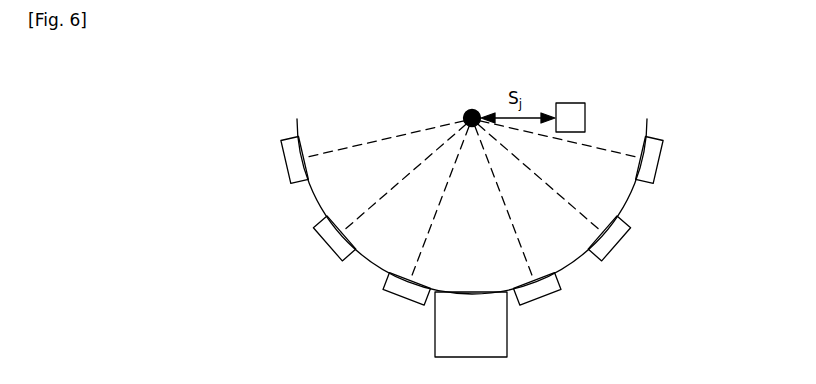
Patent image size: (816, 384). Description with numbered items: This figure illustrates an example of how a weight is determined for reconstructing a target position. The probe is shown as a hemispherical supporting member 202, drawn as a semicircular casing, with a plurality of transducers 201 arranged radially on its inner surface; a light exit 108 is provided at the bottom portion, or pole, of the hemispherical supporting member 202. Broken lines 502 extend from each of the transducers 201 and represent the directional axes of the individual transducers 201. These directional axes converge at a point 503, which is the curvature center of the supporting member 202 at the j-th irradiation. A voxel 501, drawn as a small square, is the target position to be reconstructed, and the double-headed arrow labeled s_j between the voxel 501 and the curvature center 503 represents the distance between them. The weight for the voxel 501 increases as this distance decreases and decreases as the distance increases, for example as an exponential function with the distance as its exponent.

The light exit 108 is at (507, 333).
The transducers 201 is at (627, 222).
The supporting member 202 is at (311, 201).
The voxel 501 is at (574, 103).
The broken lines 502 is at (387, 138).
The curvature center 503 is at (468, 110).